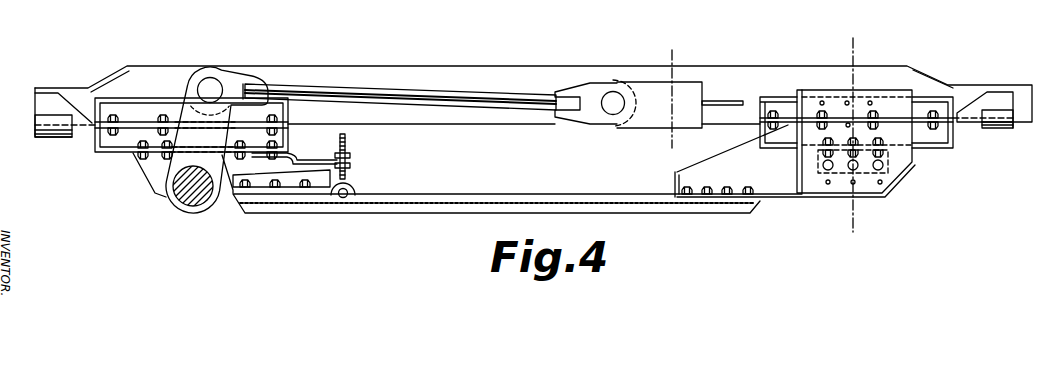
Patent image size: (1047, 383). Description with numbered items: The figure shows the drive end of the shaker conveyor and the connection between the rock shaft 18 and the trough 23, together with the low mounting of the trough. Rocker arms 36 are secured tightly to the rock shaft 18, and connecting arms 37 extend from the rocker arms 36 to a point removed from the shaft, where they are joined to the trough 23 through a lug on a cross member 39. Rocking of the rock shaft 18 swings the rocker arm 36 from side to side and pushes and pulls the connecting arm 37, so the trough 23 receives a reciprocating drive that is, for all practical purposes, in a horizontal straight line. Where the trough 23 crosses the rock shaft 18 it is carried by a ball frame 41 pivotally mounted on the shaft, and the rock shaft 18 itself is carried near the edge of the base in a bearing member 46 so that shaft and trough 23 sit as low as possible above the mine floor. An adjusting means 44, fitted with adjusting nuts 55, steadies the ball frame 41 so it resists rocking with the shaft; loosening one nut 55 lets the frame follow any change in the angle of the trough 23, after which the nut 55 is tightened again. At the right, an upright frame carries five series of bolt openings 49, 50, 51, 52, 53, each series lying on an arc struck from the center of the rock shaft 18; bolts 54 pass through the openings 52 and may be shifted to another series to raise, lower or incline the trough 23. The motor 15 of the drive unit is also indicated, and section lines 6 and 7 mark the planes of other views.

The section line 6- 6 is at (660, 145).
The section line 7- 7 is at (838, 230).
The motor 15 is at (609, 82).
The rock shaft 18 is at (193, 212).
The trough 23 is at (471, 66).
The rocker arm 36 is at (184, 66).
The connecting arm 37 is at (490, 112).
The cross member 39 is at (690, 88).
The ball frame 41 is at (283, 136).
The adjusting means 44 is at (352, 160).
The bearing member 46 is at (260, 176).
The series of bolt openings 49 is at (871, 100).
The series of bolt openings 50 is at (877, 117).
The series of bolt openings 51 is at (880, 141).
The series of bolt openings 52 is at (884, 165).
The series of bolt openings 53 is at (888, 187).
The bolts 54 is at (823, 170).
The adjusting nuts 55 is at (348, 153).